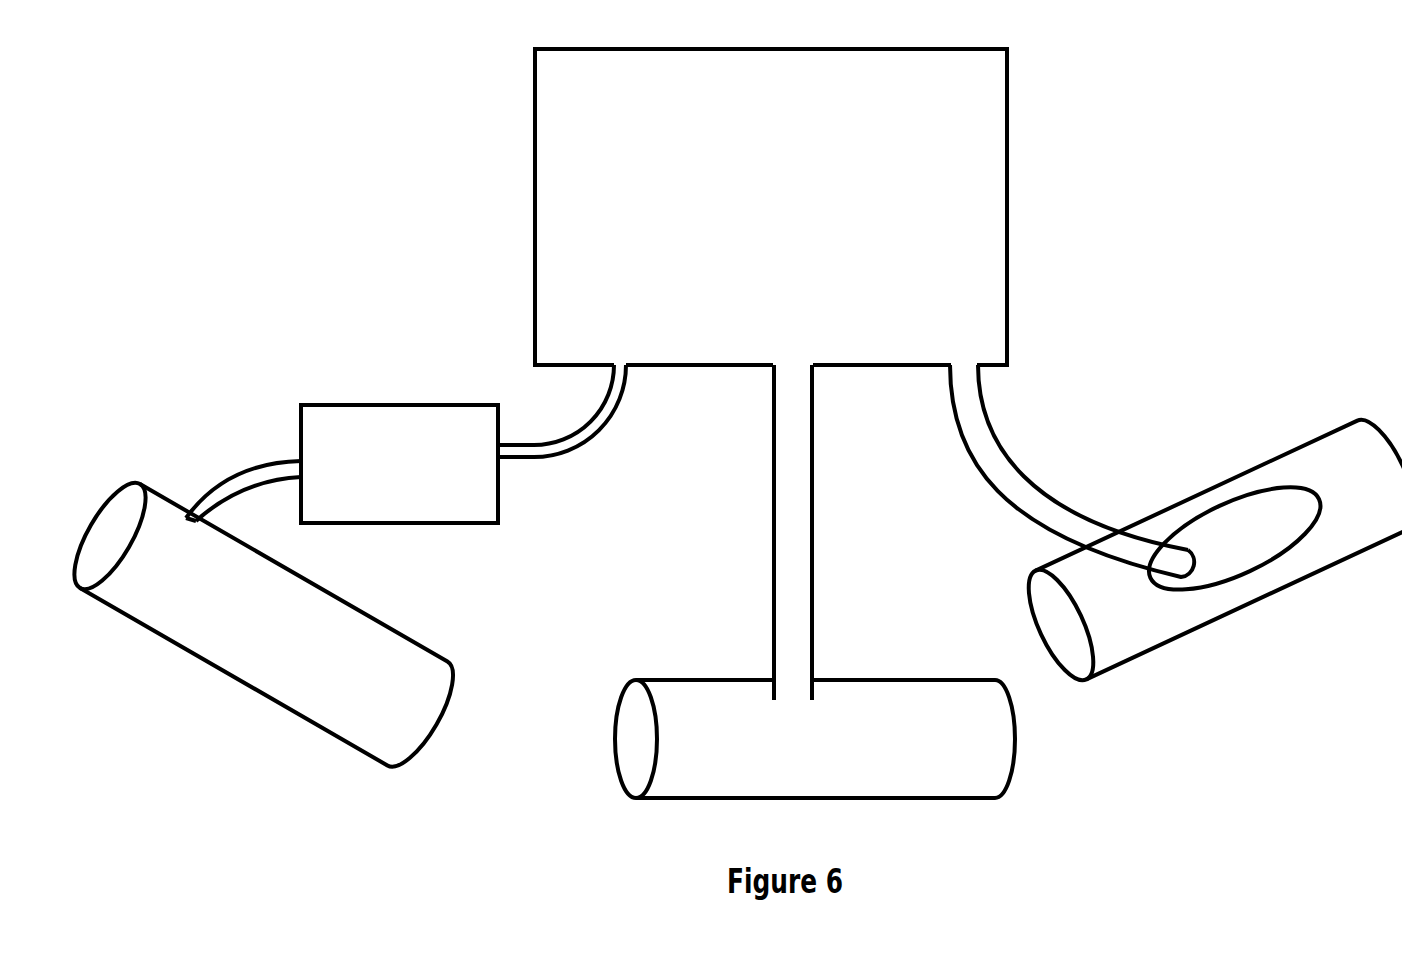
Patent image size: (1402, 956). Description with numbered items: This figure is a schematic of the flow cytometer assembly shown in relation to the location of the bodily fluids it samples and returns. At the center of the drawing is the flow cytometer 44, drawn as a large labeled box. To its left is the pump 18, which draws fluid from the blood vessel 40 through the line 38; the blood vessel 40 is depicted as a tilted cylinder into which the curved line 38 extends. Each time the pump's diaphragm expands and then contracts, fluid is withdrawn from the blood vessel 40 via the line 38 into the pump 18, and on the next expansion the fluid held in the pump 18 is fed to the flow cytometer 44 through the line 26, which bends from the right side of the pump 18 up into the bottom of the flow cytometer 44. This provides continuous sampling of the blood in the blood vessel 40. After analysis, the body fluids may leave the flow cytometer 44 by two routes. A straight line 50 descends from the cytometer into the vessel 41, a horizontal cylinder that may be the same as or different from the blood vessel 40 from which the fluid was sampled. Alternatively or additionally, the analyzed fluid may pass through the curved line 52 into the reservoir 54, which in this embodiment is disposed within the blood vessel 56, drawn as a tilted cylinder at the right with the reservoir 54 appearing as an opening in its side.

The flow cytometer 44 is at (535, 123).
The pump 18 is at (447, 404).
The line 26 is at (598, 432).
The line 38 is at (273, 460).
The blood vessel 40 is at (254, 686).
The vessel 41 is at (703, 680).
The line 50 is at (813, 447).
The line 52 is at (993, 417).
The reservoir 54 is at (1247, 493).
The blood vessel 56 is at (1217, 620).